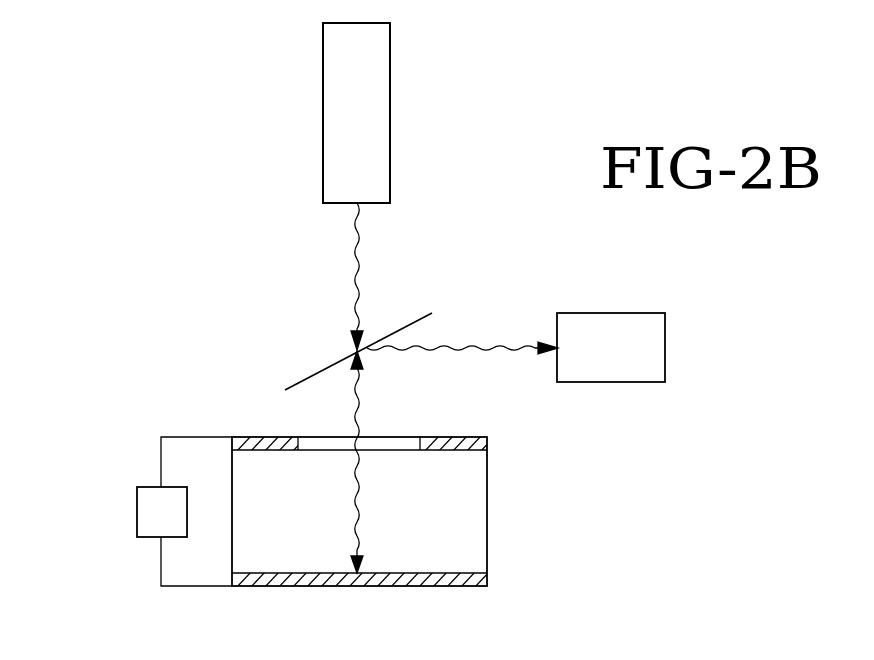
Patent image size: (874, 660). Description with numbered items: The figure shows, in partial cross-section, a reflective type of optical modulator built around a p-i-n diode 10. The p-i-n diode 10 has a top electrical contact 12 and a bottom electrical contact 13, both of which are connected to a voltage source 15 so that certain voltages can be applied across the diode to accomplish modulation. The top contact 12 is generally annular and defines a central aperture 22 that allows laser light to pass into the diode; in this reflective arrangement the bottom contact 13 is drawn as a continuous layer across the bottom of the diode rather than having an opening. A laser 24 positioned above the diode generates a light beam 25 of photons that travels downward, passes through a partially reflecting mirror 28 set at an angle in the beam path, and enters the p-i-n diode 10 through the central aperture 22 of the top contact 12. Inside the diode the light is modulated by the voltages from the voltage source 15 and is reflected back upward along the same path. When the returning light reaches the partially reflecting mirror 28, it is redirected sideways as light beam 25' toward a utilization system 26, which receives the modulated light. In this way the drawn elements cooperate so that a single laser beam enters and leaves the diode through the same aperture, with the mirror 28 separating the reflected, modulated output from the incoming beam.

The p-i-n diode 10 is at (120, 288).
The top electrical contact 12 is at (452, 436).
The bottom electrical contact 13 is at (405, 586).
The voltage source 15 is at (137, 512).
The central aperture 22 is at (390, 442).
The laser 24 is at (390, 107).
The light beam 25 is at (312, 388).
The reflected light beam 25' is at (464, 294).
The utilization system 26 is at (625, 313).
The partially reflecting mirror 28 is at (405, 326).